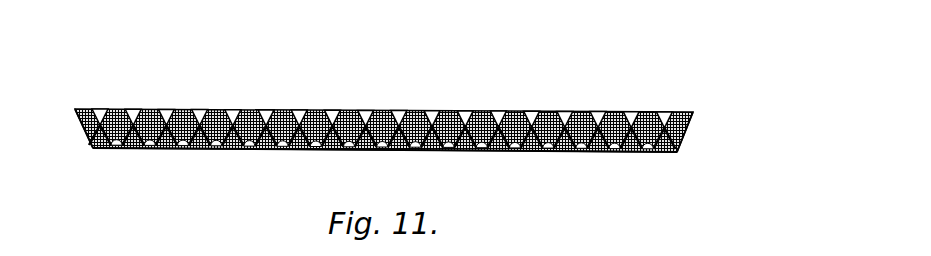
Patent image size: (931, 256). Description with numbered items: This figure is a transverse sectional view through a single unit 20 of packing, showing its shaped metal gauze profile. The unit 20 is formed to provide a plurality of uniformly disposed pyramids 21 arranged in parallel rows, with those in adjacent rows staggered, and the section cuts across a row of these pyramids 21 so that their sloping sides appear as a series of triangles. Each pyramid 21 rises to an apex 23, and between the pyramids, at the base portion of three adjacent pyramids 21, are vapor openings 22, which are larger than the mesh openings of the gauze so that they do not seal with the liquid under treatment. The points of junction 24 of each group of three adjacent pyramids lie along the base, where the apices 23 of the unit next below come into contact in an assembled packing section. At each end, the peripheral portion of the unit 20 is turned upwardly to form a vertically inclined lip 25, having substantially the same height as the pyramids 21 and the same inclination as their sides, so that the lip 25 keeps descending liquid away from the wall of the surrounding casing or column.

The unit of packing 20 is at (502, 109).
The pyramids 21 is at (329, 118).
The vapor openings 22 is at (217, 148).
The apices of the pyramids 23 is at (408, 112).
The points of junction 24 is at (380, 150).
The vertically inclined lip 25 is at (80, 127).